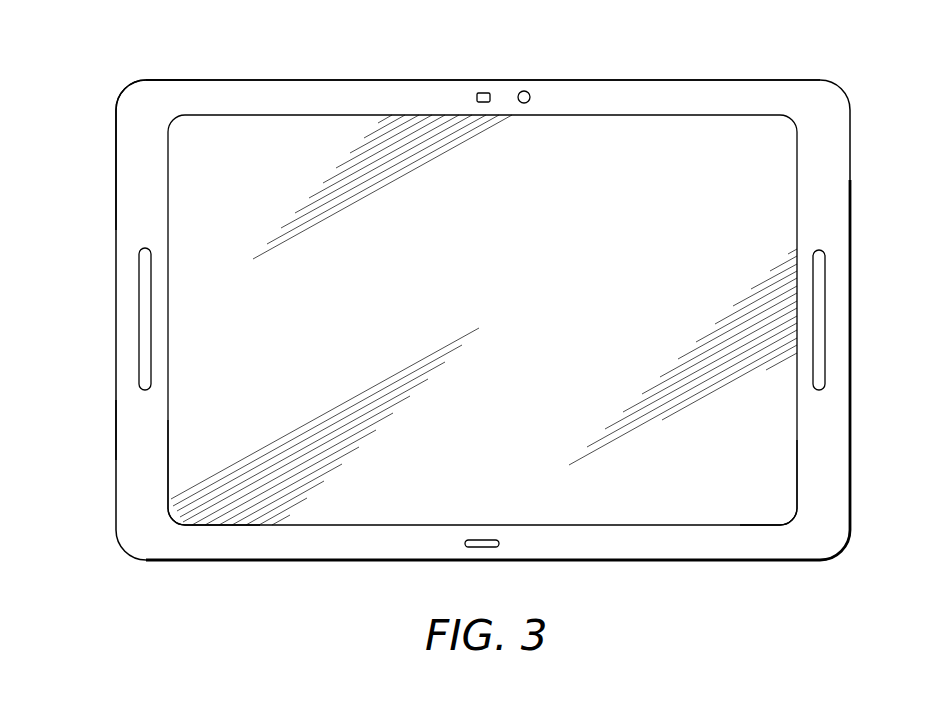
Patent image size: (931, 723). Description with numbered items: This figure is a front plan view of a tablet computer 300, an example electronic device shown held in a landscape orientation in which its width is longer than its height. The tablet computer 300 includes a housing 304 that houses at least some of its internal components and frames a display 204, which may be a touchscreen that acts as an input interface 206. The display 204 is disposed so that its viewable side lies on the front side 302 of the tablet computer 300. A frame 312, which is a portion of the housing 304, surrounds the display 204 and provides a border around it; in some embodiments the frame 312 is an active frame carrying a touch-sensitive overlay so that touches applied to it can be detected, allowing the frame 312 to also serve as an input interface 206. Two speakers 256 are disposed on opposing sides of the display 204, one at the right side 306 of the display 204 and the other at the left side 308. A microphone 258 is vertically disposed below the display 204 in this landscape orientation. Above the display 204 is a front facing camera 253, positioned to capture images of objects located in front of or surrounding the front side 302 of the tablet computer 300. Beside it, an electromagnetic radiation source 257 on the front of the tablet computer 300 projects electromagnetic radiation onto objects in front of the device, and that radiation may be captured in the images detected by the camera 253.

The tablet computer 300 is at (135, 57).
The display 204 is at (638, 115).
The input interface 206 is at (322, 114).
The front facing camera 253 is at (483, 92).
The electromagnetic radiation source 257 is at (526, 90).
The speakers 256 is at (139, 318).
The microphone 258 is at (482, 547).
The front side 302 is at (116, 422).
The housing 304 is at (116, 182).
The right side 306 is at (798, 494).
The left side 308 is at (168, 463).
The frame 312 is at (128, 134).